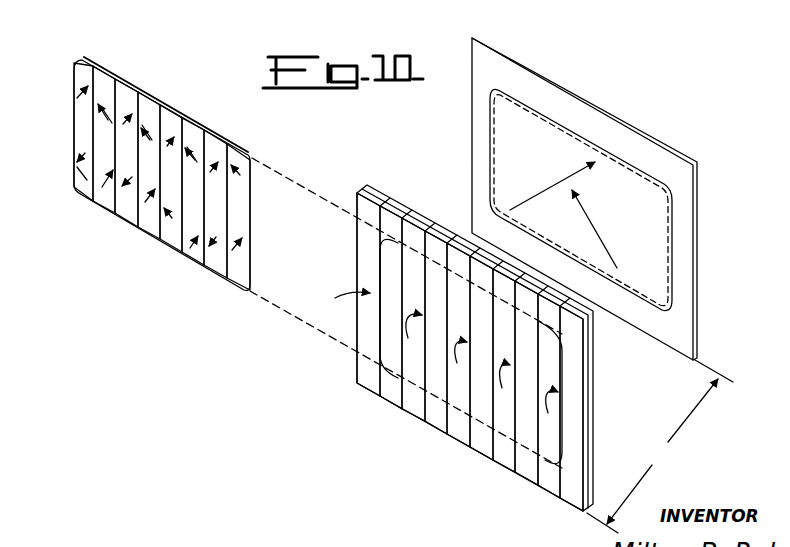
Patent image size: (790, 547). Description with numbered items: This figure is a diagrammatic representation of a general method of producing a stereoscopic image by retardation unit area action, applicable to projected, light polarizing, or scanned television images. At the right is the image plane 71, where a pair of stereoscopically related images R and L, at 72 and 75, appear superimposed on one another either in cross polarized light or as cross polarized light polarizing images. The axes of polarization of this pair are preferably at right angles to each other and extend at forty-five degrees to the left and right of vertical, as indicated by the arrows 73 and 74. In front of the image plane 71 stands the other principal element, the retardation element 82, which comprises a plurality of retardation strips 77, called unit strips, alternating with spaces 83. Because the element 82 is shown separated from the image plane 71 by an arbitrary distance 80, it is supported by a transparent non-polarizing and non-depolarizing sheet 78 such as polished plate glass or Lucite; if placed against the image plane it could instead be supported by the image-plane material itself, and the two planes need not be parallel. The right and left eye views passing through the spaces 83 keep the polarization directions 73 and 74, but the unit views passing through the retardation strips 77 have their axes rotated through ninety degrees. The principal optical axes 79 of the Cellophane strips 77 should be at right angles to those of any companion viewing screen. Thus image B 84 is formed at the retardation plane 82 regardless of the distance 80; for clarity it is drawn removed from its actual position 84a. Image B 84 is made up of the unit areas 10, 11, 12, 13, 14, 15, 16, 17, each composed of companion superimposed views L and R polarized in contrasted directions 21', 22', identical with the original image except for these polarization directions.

The unit area 10 is at (83, 195).
The unit area 11 is at (107, 210).
The unit area 12 is at (127, 217).
The unit area 13 is at (147, 235).
The unit area 14 is at (167, 255).
The unit area 15 is at (190, 260).
The unit area 16 is at (213, 275).
The unit area 17 is at (243, 293).
The direction of polarization 21' is at (163, 172).
The direction of polarization 22' is at (177, 195).
The image B 84 is at (73, 142).
The actual position of image B 84a is at (563, 440).
The image plane 71 is at (667, 148).
The right stereoscopic image 72 is at (667, 225).
The polarization axis arrow 73 is at (532, 197).
The polarization axis arrow 74 is at (593, 210).
The left stereoscopic image 75 is at (677, 247).
The retardation strips 77 is at (370, 385).
The transparent sheet 78 is at (592, 356).
The principal optical axes 79 is at (436, 362).
The arbitrary distance 80 is at (660, 446).
The retardation element 82 is at (585, 380).
The spaces 83 is at (393, 398).